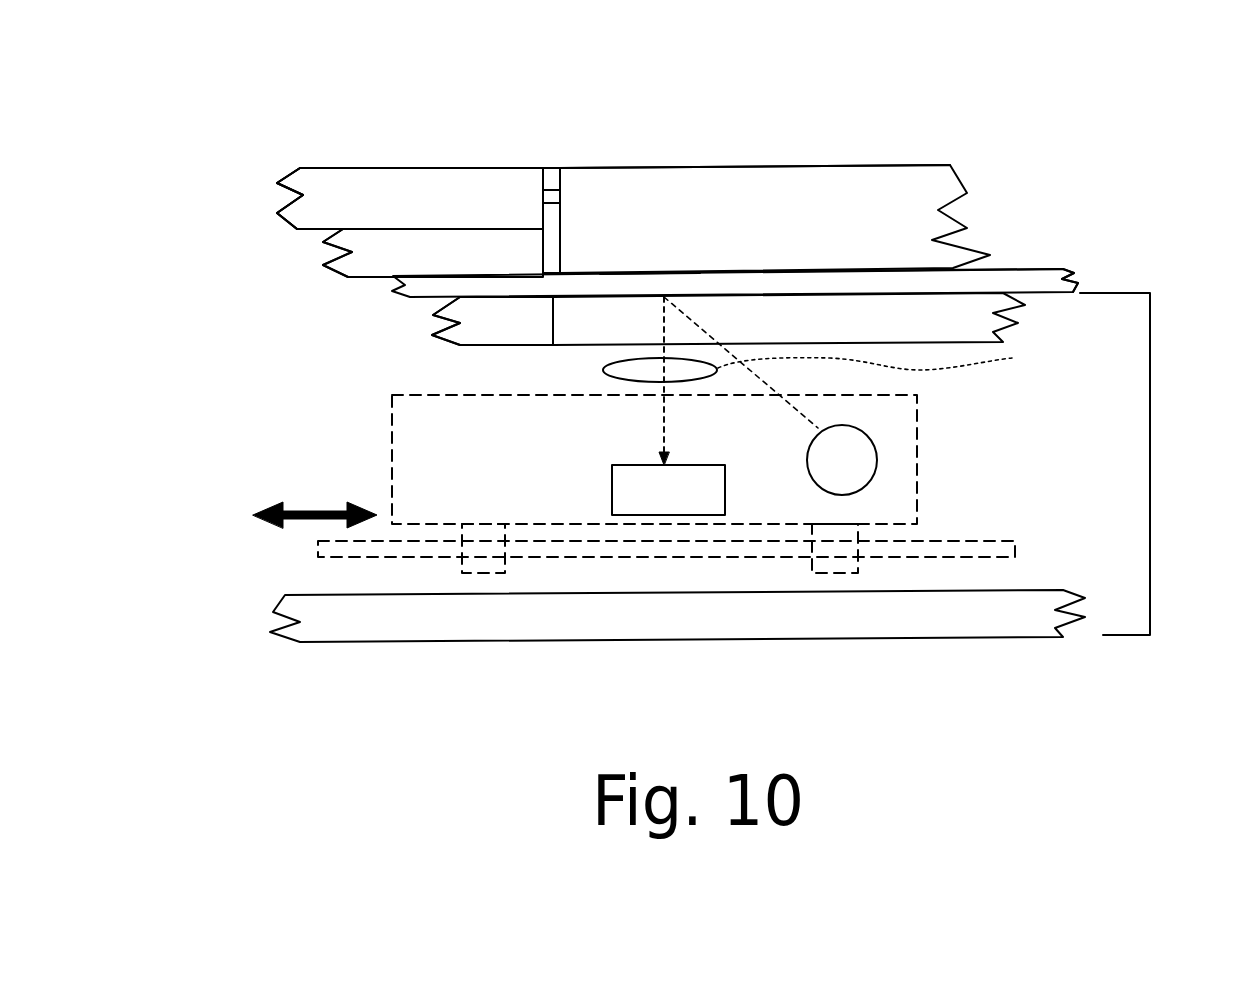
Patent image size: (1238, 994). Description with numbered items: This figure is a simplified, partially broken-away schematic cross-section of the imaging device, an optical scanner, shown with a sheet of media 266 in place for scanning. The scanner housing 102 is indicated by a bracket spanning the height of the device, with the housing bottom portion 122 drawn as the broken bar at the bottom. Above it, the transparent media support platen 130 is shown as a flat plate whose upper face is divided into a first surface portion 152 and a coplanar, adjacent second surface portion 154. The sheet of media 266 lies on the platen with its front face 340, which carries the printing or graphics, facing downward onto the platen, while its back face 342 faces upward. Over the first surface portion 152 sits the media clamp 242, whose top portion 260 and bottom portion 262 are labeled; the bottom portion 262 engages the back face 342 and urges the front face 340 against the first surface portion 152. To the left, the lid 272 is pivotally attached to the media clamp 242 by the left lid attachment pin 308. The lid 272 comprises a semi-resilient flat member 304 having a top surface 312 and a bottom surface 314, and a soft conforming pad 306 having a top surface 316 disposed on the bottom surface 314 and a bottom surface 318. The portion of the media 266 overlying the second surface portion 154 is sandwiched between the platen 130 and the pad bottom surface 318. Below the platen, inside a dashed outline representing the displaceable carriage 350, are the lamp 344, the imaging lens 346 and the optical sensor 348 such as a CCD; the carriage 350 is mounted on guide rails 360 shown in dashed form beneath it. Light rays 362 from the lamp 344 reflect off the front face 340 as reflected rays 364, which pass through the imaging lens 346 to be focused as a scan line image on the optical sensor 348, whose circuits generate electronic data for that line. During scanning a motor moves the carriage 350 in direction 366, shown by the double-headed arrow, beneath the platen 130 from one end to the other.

The scanner housing 102 is at (1150, 467).
The housing bottom portion 122 is at (658, 627).
The transparent media support platen 130 is at (433, 345).
The first surface portion 152 is at (892, 333).
The second surface portion 154 is at (528, 333).
The media clamp 242 is at (765, 150).
The top portion 260 is at (905, 165).
The bottom portion 262 is at (633, 274).
The sheet of media 266 is at (1053, 280).
The lid 272 is at (453, 124).
The semi-resilient flat member 304 is at (477, 210).
The soft conforming pad 306 is at (440, 262).
The left lid attachment pin 308 is at (552, 193).
The top surface 312 is at (432, 168).
The bottom surface 314 is at (303, 229).
The top surface 316 is at (507, 229).
The bottom surface 318 is at (350, 278).
The front face 340 is at (428, 298).
The back face 342 is at (1055, 269).
The lamp 344 is at (823, 473).
The imaging lens 346 is at (603, 370).
The optical sensor 348 is at (646, 503).
The displaceable carriage 350 is at (917, 467).
The guide rails 360 is at (968, 541).
The light rays 362 is at (890, 358).
The reflected rays 364 is at (660, 425).
The direction 366 is at (317, 510).